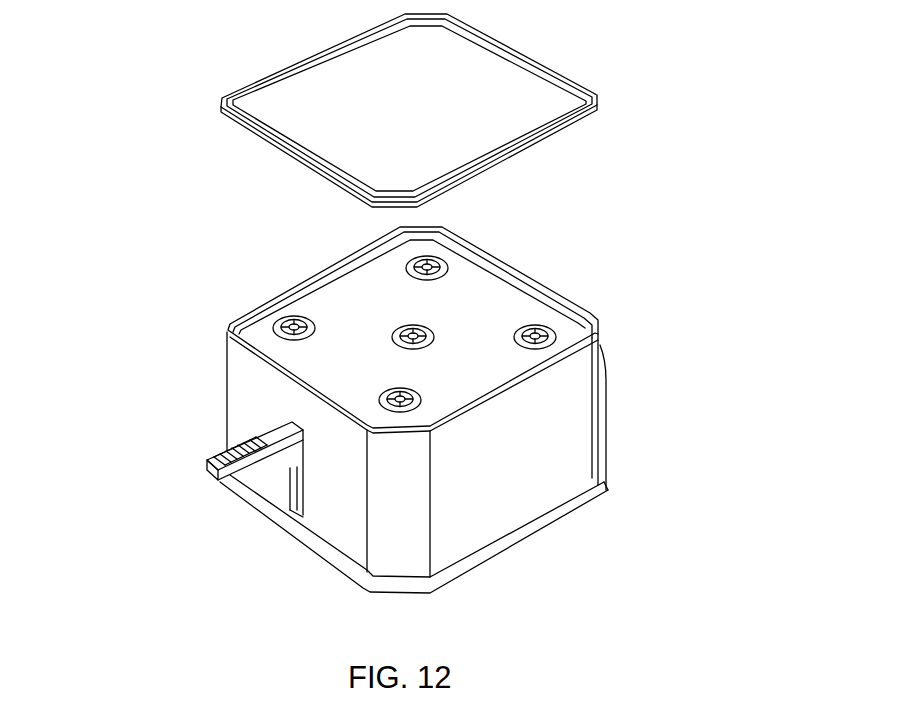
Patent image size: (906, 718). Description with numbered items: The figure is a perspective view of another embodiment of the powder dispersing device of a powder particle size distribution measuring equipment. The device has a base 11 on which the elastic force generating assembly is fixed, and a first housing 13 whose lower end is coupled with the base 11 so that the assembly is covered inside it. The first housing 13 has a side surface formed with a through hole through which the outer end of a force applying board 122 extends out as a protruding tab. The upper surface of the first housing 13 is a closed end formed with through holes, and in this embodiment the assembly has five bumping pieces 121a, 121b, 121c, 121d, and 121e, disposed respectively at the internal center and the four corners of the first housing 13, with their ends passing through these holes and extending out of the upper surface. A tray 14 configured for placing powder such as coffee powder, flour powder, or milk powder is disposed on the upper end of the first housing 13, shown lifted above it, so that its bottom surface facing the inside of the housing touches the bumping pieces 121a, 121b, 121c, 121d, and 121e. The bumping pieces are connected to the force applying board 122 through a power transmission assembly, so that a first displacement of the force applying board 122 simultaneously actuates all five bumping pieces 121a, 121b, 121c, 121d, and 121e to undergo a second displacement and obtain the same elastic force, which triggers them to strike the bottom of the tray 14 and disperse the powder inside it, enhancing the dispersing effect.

The base 11 is at (600, 493).
The first housing 13 is at (600, 397).
The tray 14 is at (550, 68).
The bumping piece 121a is at (434, 338).
The bumping piece 121b is at (556, 337).
The bumping piece 121c is at (292, 316).
The bumping piece 121d is at (448, 266).
The bumping piece 121e is at (421, 397).
The force applying board 122 is at (205, 470).